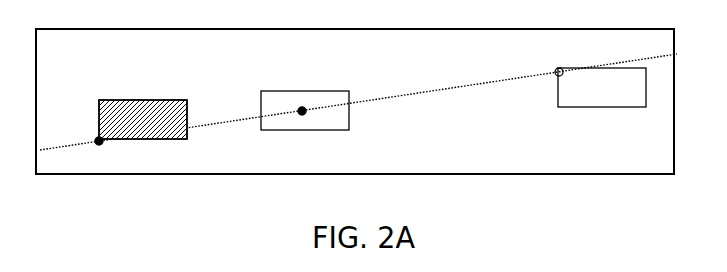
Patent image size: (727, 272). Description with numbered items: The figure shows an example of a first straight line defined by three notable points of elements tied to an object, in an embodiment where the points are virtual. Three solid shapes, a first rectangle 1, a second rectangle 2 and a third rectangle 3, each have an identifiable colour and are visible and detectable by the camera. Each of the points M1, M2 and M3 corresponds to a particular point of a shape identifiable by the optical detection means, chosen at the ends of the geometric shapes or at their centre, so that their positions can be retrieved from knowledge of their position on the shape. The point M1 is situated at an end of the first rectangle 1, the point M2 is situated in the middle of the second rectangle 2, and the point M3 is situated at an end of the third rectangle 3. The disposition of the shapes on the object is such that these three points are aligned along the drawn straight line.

The first rectangle 1 is at (151, 100).
The second rectangle 2 is at (287, 89).
The third rectangle 3 is at (578, 107).
The point M1 is at (98, 140).
The point M2 is at (303, 112).
The point M3 is at (554, 69).